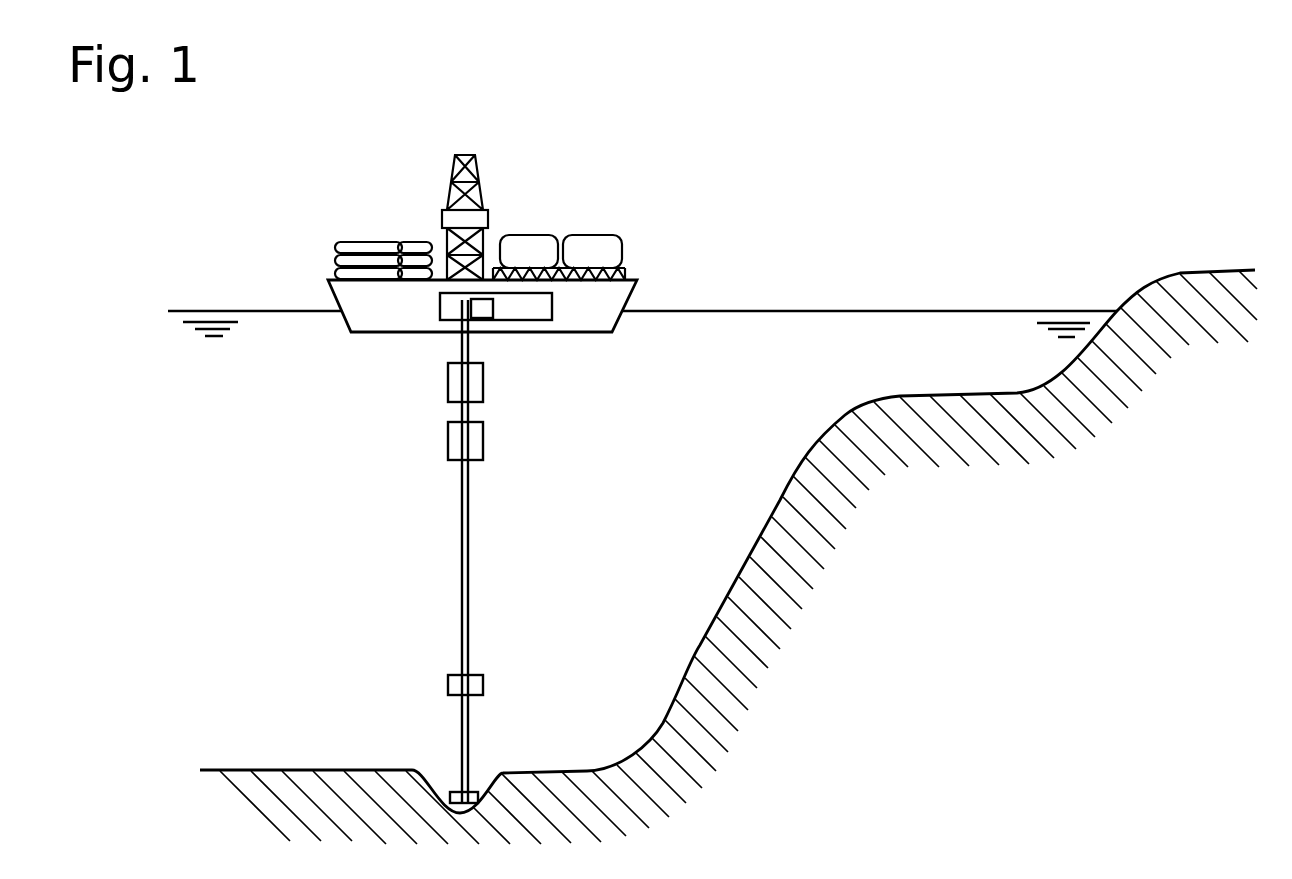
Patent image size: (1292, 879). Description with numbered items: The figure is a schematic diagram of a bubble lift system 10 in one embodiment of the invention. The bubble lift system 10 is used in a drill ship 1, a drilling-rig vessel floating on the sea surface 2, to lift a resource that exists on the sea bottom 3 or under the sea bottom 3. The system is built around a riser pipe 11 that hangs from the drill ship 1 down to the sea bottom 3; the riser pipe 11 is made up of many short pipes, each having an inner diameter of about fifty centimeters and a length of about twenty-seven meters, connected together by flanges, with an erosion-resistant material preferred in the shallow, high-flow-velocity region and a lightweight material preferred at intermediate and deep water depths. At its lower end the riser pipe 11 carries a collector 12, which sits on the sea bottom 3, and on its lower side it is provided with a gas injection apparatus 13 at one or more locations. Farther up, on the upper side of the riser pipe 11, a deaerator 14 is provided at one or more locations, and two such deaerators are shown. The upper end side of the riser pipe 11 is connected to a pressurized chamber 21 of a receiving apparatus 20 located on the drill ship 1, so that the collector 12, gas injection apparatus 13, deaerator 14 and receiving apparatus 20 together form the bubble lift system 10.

The drill ship 1 is at (482, 248).
The sea surface 2 is at (767, 310).
The sea bottom 3 is at (318, 770).
The bubble lift system 10 is at (456, 551).
The riser pipe 11 is at (470, 527).
The collector 12 is at (453, 792).
The gas injection apparatus 13 is at (483, 683).
The deaerator 14 is at (483, 382).
The receiving apparatus 20 is at (512, 312).
The pressurized chamber 21 is at (457, 320).